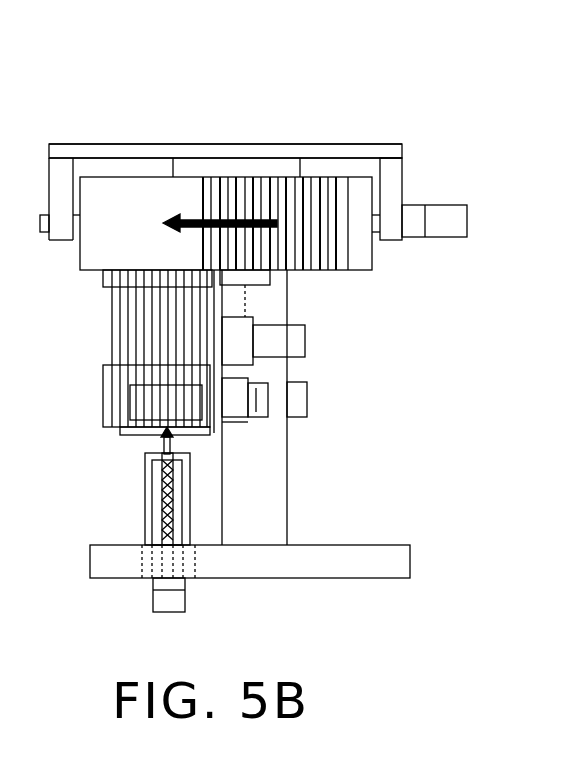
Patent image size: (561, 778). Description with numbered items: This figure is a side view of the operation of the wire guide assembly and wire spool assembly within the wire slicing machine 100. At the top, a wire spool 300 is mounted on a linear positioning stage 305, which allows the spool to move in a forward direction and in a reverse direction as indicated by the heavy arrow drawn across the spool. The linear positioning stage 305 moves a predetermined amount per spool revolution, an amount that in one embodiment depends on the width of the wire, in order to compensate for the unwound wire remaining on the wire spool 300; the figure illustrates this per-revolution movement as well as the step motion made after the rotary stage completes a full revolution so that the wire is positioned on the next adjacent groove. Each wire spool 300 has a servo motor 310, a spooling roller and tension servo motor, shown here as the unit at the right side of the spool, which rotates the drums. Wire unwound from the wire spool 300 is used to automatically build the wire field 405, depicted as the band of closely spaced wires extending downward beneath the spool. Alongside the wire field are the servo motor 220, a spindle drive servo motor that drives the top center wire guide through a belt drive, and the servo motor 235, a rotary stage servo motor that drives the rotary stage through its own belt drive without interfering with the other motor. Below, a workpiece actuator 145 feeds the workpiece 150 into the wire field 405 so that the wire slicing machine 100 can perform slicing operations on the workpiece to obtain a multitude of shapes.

The wire slicing machine 100 is at (545, 73).
The wire spool 300 is at (135, 195).
The linear positioning stage 305 is at (263, 155).
The servo motor 310 is at (417, 210).
The wire field 405 is at (115, 345).
The workpiece 150 is at (138, 438).
The servo motor 220 is at (305, 340).
The servo motor 235 is at (297, 405).
The workpiece actuator 145 is at (173, 600).